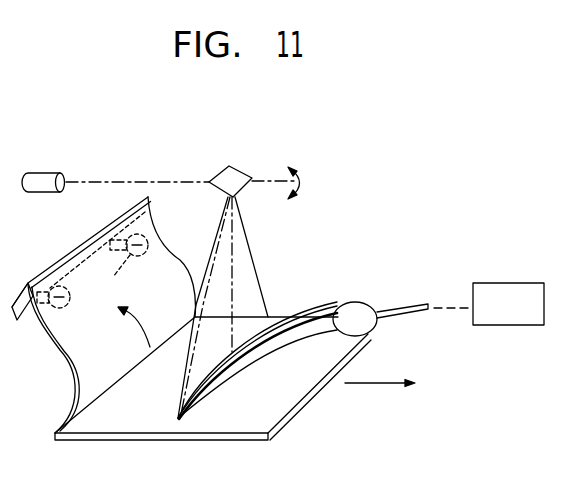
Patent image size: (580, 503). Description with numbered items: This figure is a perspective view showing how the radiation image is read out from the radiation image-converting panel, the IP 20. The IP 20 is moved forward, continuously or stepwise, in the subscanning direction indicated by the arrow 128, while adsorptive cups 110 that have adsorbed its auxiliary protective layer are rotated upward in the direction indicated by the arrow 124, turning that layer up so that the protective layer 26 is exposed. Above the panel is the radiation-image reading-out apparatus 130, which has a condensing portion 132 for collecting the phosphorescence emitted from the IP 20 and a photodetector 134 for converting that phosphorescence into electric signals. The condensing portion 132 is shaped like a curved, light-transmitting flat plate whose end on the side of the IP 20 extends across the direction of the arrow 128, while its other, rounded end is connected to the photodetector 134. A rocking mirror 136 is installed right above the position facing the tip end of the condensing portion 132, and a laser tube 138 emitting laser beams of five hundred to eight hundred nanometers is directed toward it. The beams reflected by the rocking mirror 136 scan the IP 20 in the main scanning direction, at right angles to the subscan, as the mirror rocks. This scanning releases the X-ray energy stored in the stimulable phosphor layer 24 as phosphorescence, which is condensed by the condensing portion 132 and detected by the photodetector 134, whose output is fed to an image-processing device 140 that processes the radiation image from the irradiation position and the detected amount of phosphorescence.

The IP 20 is at (133, 441).
The stimulable phosphor layer 24 is at (63, 362).
The protective layer 26 is at (287, 400).
The adsorptive cups 110 is at (70, 294).
The arrow 124 is at (148, 333).
The arrow 128 is at (375, 385).
The radiation-image reading-out apparatus 130 is at (309, 220).
The condensing portion 132 is at (311, 305).
The photodetector 134 is at (364, 308).
The rocking mirror 136 is at (235, 171).
The laser tube 138 is at (42, 172).
The image-processing device 140 is at (508, 326).